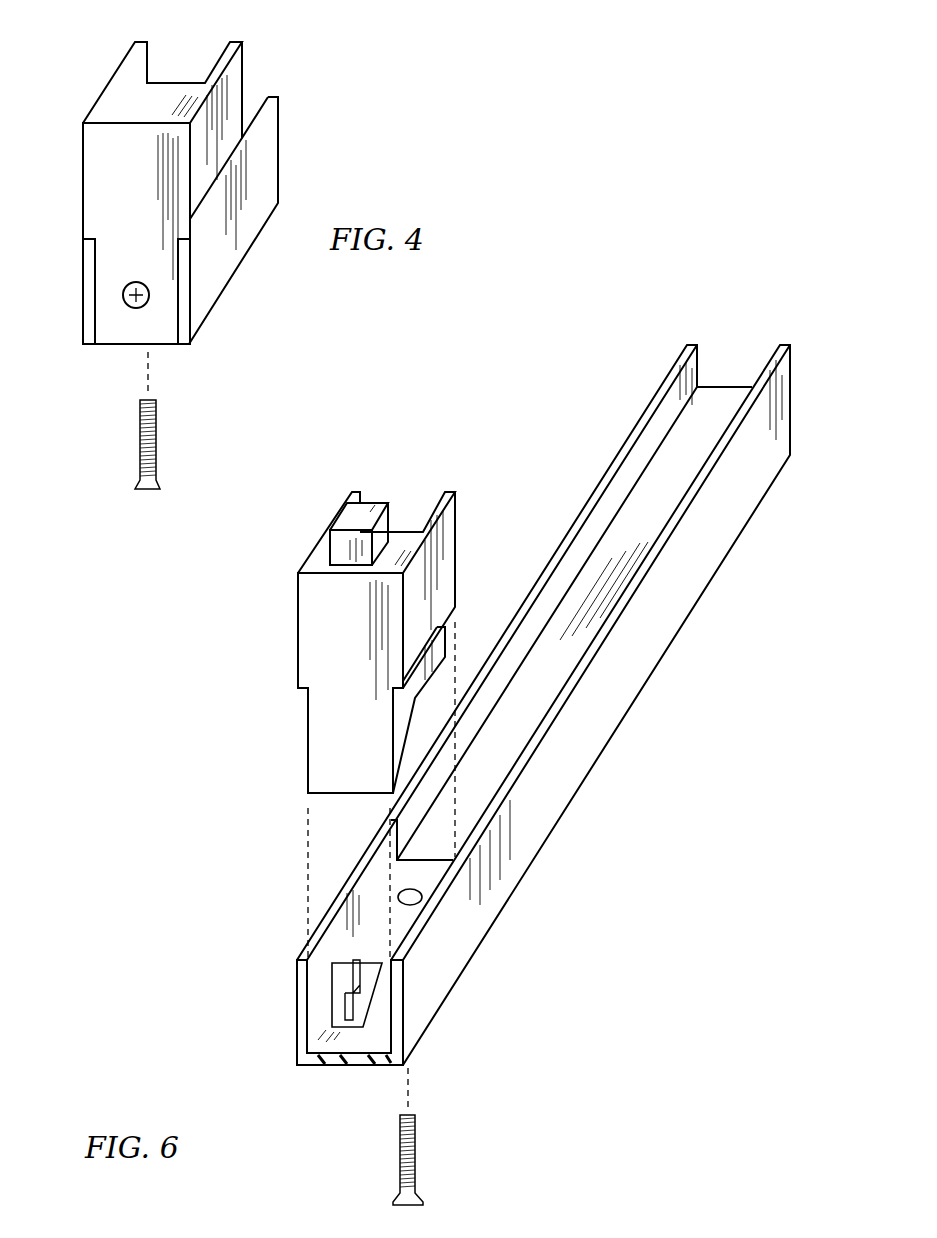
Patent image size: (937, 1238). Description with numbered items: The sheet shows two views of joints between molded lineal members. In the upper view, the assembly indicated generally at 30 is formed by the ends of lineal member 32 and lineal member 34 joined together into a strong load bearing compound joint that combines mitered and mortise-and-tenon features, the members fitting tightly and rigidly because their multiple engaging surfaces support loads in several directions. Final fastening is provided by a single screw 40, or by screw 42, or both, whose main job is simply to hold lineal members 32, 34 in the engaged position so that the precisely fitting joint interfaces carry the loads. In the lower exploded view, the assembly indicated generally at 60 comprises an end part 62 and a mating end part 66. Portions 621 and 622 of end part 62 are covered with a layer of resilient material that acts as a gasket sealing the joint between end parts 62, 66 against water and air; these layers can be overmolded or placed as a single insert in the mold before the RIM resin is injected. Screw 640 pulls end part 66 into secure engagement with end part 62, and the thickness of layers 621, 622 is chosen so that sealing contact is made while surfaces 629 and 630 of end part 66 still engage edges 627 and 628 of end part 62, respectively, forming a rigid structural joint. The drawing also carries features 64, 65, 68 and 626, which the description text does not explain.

In FIG. 4, the bracket 30 is at (227, 186).
In FIG. 4, the lineal member 32 is at (281, 139).
In FIG. 4, the lineal member 34 is at (243, 68).
In FIG. 4, the screw 40 is at (123, 290).
In FIG. 4, the screw 42 is at (140, 425).
In FIG. 6, the channel assembly 60 is at (531, 729).
In FIG. 6, the end part 62 is at (440, 975).
In FIG. 6, the channel body 64 is at (693, 573).
In FIG. 6, the end of channel 65 is at (791, 393).
In FIG. 6, the end part 66 is at (423, 708).
In FIG. 6, the protrusion 68 is at (368, 504).
In FIG. 6, the resilient material layer 621 is at (353, 1038).
In FIG. 6, the resilient material layer 622 is at (418, 873).
In FIG. 6, the tab 626 is at (343, 1003).
In FIG. 6, the edge 627 is at (343, 882).
In FIG. 6, the edge 628 is at (423, 918).
In FIG. 6, the surface 629 is at (298, 692).
In FIG. 6, the surface 630 is at (405, 690).
In FIG. 6, the screw 640 is at (418, 1158).